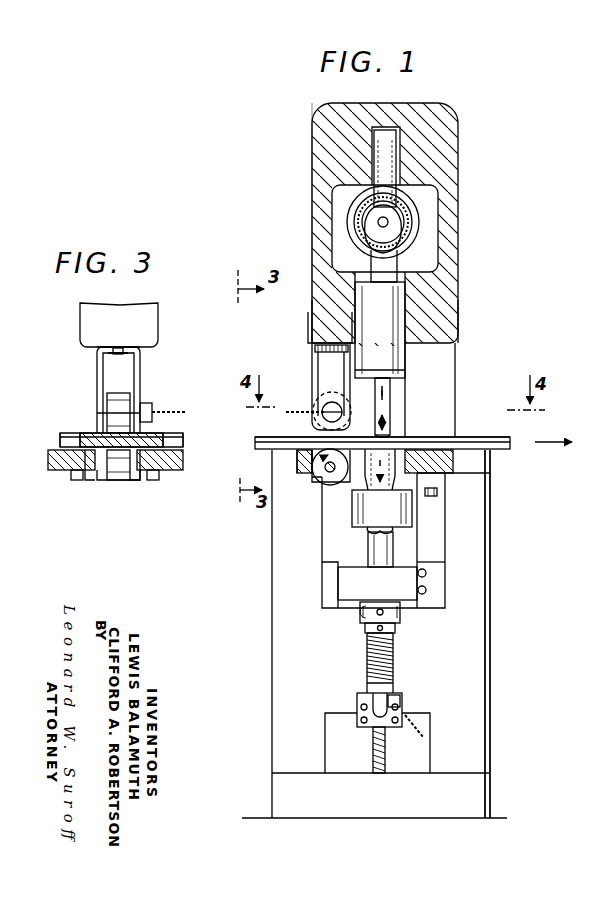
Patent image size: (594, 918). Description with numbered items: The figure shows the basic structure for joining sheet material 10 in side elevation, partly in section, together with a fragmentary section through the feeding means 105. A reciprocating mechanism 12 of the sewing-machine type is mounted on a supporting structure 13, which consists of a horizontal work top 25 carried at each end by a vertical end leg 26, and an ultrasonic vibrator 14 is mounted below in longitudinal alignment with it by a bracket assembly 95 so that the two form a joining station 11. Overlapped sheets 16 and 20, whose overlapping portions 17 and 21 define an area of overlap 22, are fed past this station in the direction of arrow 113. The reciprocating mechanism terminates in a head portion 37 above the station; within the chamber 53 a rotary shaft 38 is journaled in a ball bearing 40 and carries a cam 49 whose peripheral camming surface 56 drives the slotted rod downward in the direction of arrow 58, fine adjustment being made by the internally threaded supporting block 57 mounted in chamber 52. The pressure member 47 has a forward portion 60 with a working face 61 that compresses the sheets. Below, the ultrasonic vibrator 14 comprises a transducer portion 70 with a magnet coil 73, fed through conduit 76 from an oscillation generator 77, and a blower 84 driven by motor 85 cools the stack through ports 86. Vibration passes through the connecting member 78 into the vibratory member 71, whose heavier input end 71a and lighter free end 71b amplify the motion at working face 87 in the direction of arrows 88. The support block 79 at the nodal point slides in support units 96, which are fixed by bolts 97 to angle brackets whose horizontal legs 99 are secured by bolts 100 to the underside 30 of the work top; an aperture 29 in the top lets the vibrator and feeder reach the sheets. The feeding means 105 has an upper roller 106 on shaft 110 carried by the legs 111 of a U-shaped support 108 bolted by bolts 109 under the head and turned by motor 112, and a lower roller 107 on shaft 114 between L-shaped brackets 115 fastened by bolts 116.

In FIG. 1, the basic structure for joining sheet material 10 is at (298, 146).
In FIG. 1, the joining or sealing station 11 is at (400, 428).
In FIG. 1, the reciprocating mechanism 12 is at (466, 147).
In FIG. 1, the supporting structure 13 is at (270, 640).
In FIG. 1, the ultrasonic vibrator 14 is at (358, 621).
In FIG. 1, the sheet of thermoplastic material 16 is at (493, 437).
In FIG. 3, the overlapping portion 17 is at (140, 434).
In FIG. 1, the sheet of thermoplastic material 20 is at (507, 451).
In FIG. 3, the overlapping portion 21 is at (168, 445).
In FIG. 3, the area of overlap 22 is at (88, 432).
In FIG. 1, the work top 25 is at (490, 469).
In FIG. 1, the end leg 26 is at (491, 525).
In FIG. 1, the aperture 29 is at (300, 469).
In FIG. 3, the underside of the work top 30 is at (168, 481).
In FIG. 1, the head portion 37 is at (460, 160).
In FIG. 3, the head portion 37 is at (92, 339).
In FIG. 1, the rotary shaft 38 is at (390, 223).
In FIG. 1, the ball bearing 40 is at (356, 208).
In FIG. 1, the pressure member 47 is at (400, 386).
In FIG. 1, the cam 49 is at (372, 240).
In FIG. 1, the chamber 52 is at (412, 274).
In FIG. 1, the chamber 53 is at (433, 198).
In FIG. 1, the peripheral camming surface 56 is at (410, 242).
In FIG. 1, the internally threaded supporting block 57 is at (407, 356).
In FIG. 1, the arrow 58 is at (380, 403).
In FIG. 1, the forward portion 60 is at (392, 399).
In FIG. 1, the working face 61 is at (392, 447).
In FIG. 1, the transducer portion 70 is at (396, 661).
In FIG. 1, the vibratory member 71 is at (348, 515).
In FIG. 1, the input end portion 71a is at (362, 521).
In FIG. 1, the free end 71b is at (362, 488).
In FIG. 1, the magnet coil 73 is at (371, 653).
In FIG. 1, the conduit 76 is at (386, 757).
In FIG. 1, the oscillation generator 77 is at (330, 733).
In FIG. 1, the connecting member 78 is at (369, 557).
In FIG. 1, the support block 79 is at (340, 591).
In FIG. 1, the blower 84 is at (364, 696).
In FIG. 1, the motor 85 is at (404, 700).
In FIG. 1, the ports 86 is at (403, 614).
In FIG. 1, the working face 87 is at (455, 438).
In FIG. 1, the arrows 88 is at (390, 488).
In FIG. 1, the bracket assembly 95 is at (450, 570).
In FIG. 1, the support units 96 is at (324, 577).
In FIG. 1, the bolts 97 is at (427, 591).
In FIG. 1, the horizontal legs 99 is at (438, 493).
In FIG. 1, the bolts 100 is at (432, 497).
In FIG. 1, the feeding means 105 is at (296, 385).
In FIG. 3, the feeding means 105 is at (146, 388).
In FIG. 1, the upper roller 106 is at (322, 418).
In FIG. 3, the upper roller 106 is at (108, 400).
In FIG. 1, the lower roller 107 is at (322, 479).
In FIG. 3, the lower roller 107 is at (113, 481).
In FIG. 1, the U-shaped support 108 is at (311, 344).
In FIG. 3, the U-shaped support 108 is at (124, 350).
In FIG. 1, the bolts 109 is at (337, 358).
In FIG. 3, the bolts 109 is at (133, 356).
In FIG. 3, the shaft 110 is at (100, 414).
In FIG. 1, the legs 111 is at (326, 371).
In FIG. 3, the legs 111 is at (140, 371).
In FIG. 1, the motor 112 is at (312, 414).
In FIG. 3, the motor 112 is at (151, 408).
In FIG. 1, the arrow 113 is at (551, 437).
In FIG. 3, the shaft 114 is at (100, 483).
In FIG. 1, the L-shaped brackets 115 is at (304, 456).
In FIG. 3, the L-shaped brackets 115 is at (74, 482).
In FIG. 3, the bolts 116 is at (177, 458).